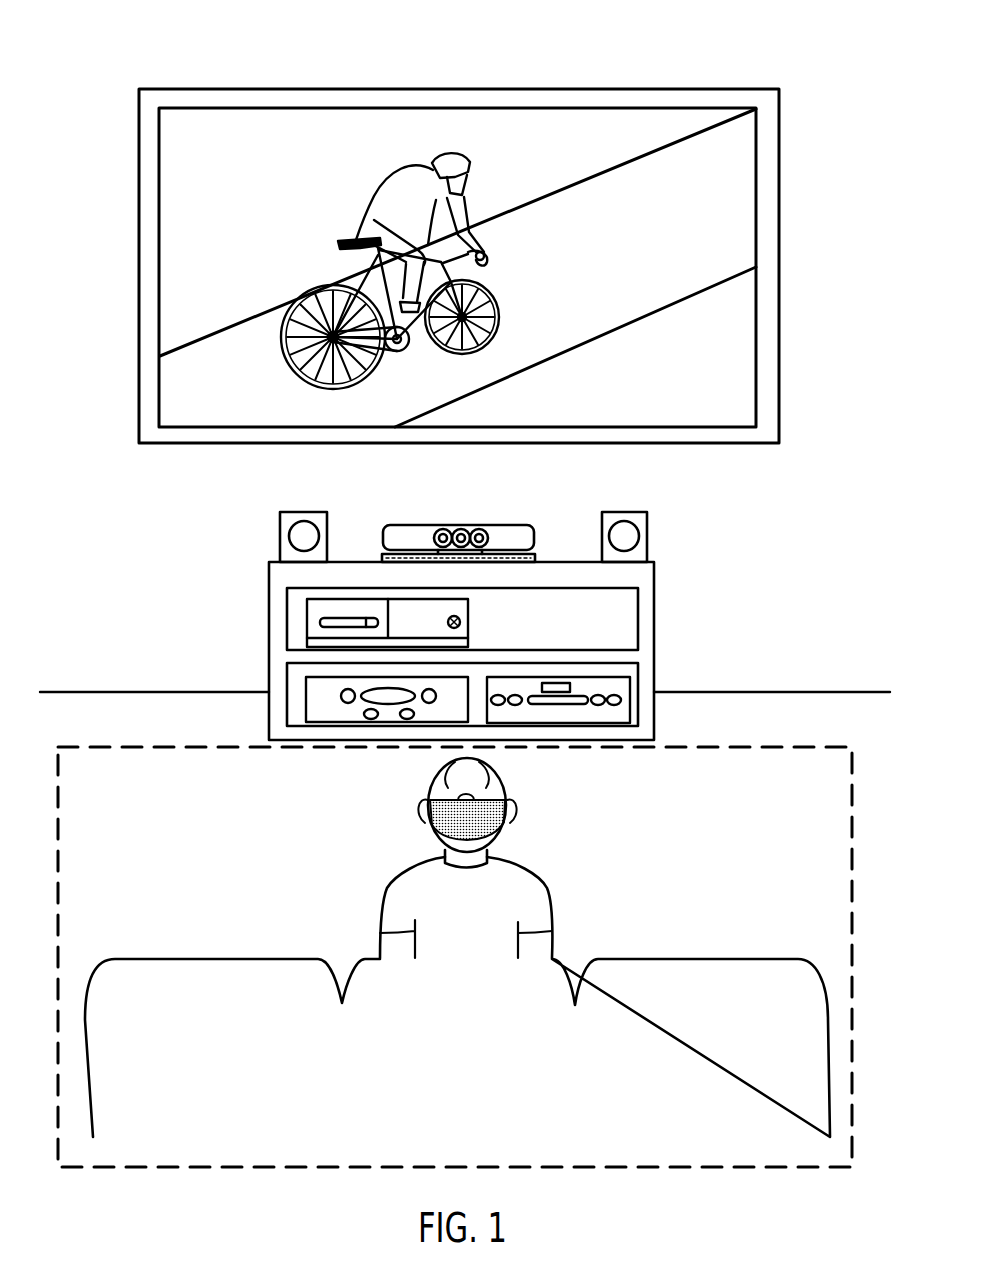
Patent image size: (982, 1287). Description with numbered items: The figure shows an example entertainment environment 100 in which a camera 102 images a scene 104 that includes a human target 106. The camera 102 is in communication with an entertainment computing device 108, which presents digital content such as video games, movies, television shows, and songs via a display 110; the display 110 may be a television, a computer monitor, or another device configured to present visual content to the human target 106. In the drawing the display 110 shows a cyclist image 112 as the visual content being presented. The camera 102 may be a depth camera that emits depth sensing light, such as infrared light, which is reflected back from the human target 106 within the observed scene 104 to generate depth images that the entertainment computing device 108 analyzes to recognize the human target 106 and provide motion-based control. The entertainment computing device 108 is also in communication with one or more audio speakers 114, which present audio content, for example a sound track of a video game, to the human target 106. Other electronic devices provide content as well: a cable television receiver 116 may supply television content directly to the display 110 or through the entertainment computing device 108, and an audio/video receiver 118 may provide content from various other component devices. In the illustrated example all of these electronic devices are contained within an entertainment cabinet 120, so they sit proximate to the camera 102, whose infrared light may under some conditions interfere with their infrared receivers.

The entertainment environment 100 is at (787, 29).
The camera 102 is at (472, 525).
The scene 104 is at (783, 747).
The human target 106 is at (503, 860).
The entertainment computing device 108 is at (307, 617).
The display 110 is at (779, 240).
The displayed content (cyclist) 112 is at (400, 182).
The audio speakers 114 is at (308, 512).
The cable television receiver 116 is at (306, 702).
The audio/video (A/V) receiver 118 is at (628, 700).
The entertainment cabinet 120 is at (652, 610).